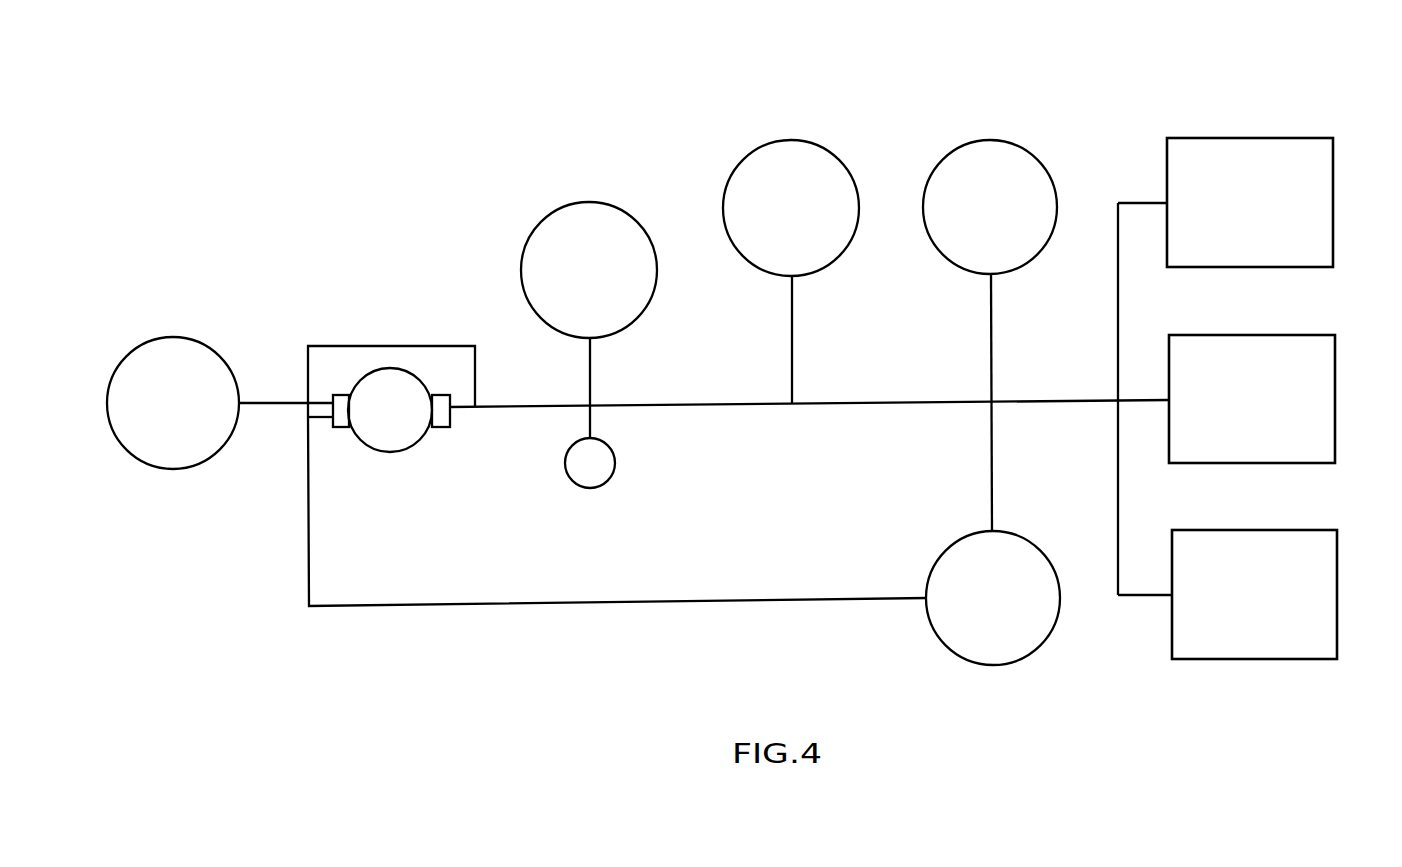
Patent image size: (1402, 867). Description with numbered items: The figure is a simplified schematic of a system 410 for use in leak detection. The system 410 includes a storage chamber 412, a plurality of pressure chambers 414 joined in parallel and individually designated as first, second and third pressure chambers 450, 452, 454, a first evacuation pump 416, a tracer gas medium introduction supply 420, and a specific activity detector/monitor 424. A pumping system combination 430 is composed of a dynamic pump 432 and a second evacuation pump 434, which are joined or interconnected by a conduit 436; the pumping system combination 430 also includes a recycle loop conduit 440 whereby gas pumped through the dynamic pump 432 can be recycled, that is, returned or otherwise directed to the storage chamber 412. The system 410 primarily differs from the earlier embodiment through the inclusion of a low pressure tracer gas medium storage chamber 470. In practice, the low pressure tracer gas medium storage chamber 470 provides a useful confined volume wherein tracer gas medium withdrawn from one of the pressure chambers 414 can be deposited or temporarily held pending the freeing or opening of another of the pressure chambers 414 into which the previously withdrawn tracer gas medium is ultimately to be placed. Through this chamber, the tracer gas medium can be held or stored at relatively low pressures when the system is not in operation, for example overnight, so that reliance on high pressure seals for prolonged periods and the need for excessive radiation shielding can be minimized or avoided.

The system 410 is at (1010, 75).
The storage chamber 412 is at (153, 413).
The pressure chambers 414 is at (1250, 672).
The first evacuation pump 416 is at (969, 216).
The tracer gas medium introduction supply 420 is at (569, 278).
The specific activity detector/monitor 424 is at (592, 477).
The pumping system combination 430 is at (620, 606).
The dynamic pump 432 is at (372, 422).
The second evacuation pump 434 is at (973, 607).
The conduit 436 is at (345, 607).
The recycle loop conduit 440 is at (388, 346).
The first pressure chamber 450 is at (1229, 217).
The second pressure chamber 452 is at (1231, 411).
The third pressure chamber 454 is at (1235, 608).
The low pressure tracer gas medium storage chamber 470 is at (772, 218).